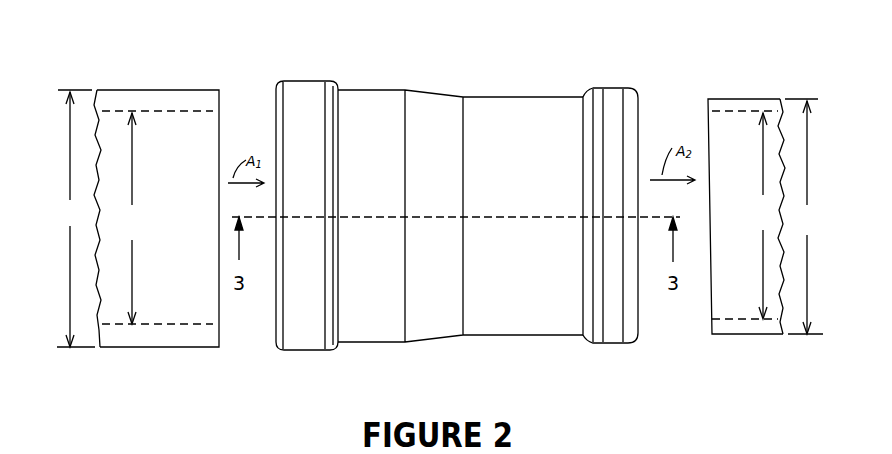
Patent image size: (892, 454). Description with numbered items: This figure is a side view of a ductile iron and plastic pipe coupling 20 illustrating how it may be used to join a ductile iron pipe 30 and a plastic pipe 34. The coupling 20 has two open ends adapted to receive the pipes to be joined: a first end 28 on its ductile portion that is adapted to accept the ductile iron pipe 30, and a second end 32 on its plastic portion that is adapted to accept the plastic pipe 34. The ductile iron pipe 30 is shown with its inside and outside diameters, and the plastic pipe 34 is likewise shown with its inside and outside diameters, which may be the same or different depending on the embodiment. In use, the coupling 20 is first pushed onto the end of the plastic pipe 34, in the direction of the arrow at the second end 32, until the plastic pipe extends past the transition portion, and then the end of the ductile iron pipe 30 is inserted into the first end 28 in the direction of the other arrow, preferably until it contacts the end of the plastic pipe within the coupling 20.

The ductile iron and plastic pipe coupling 20 is at (461, 207).
The first end 28 is at (267, 307).
The ductile iron pipe 30 is at (152, 83).
The second end 32 is at (650, 300).
The plastic pipe 34 is at (737, 95).